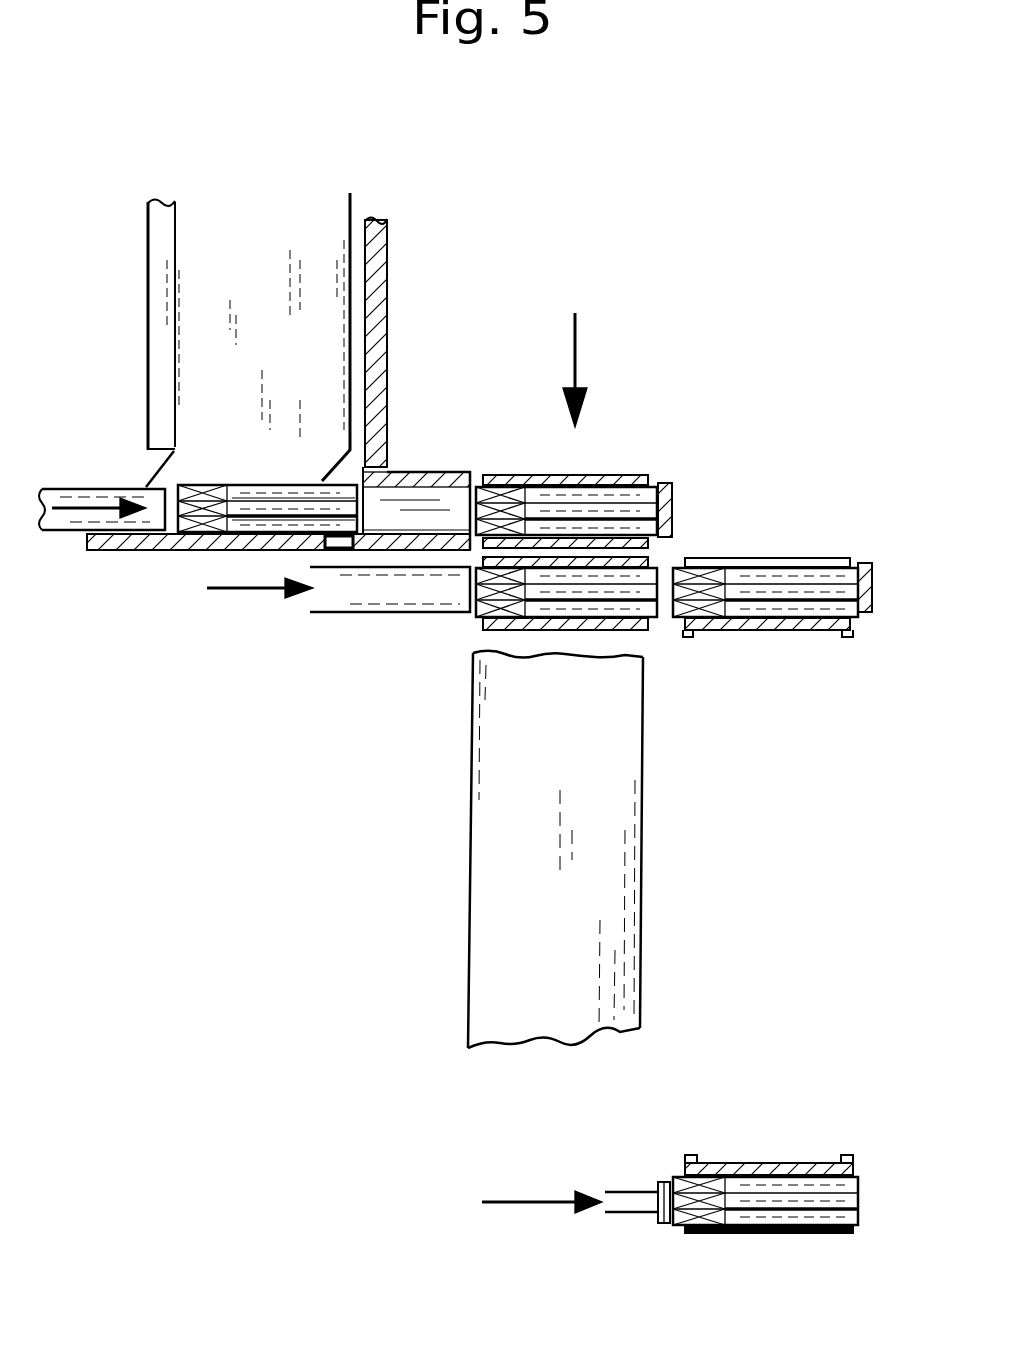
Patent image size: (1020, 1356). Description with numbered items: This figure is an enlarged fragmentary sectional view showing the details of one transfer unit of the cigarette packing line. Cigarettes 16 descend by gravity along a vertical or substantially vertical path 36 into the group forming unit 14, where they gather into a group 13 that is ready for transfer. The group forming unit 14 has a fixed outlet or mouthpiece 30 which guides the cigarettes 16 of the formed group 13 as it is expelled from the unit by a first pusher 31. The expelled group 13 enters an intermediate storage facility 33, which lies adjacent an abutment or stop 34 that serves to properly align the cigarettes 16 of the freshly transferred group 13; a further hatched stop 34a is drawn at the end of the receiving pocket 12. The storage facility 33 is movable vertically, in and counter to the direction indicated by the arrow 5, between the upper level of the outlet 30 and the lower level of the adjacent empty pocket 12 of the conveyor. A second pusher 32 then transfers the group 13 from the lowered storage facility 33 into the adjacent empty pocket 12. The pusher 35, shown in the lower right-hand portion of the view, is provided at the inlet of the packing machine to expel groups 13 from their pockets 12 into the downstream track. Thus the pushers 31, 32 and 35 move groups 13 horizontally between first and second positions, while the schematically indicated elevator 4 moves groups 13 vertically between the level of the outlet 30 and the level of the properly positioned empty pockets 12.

The elevator 4 is at (448, 868).
The arrow 5 is at (575, 348).
The pocket 12 is at (767, 627).
The group 13 is at (287, 507).
The group forming unit 14 is at (210, 467).
The cigarette 16 is at (258, 491).
The fixed outlet or mouthpiece 30 is at (416, 480).
The first pusher 31 is at (68, 518).
The second pusher 32 is at (352, 588).
The intermediate storage facility 33 is at (580, 482).
The abutment or stop 34 is at (663, 505).
The cap 34a is at (863, 563).
The pusher 35 is at (625, 1193).
The path 36 is at (203, 267).